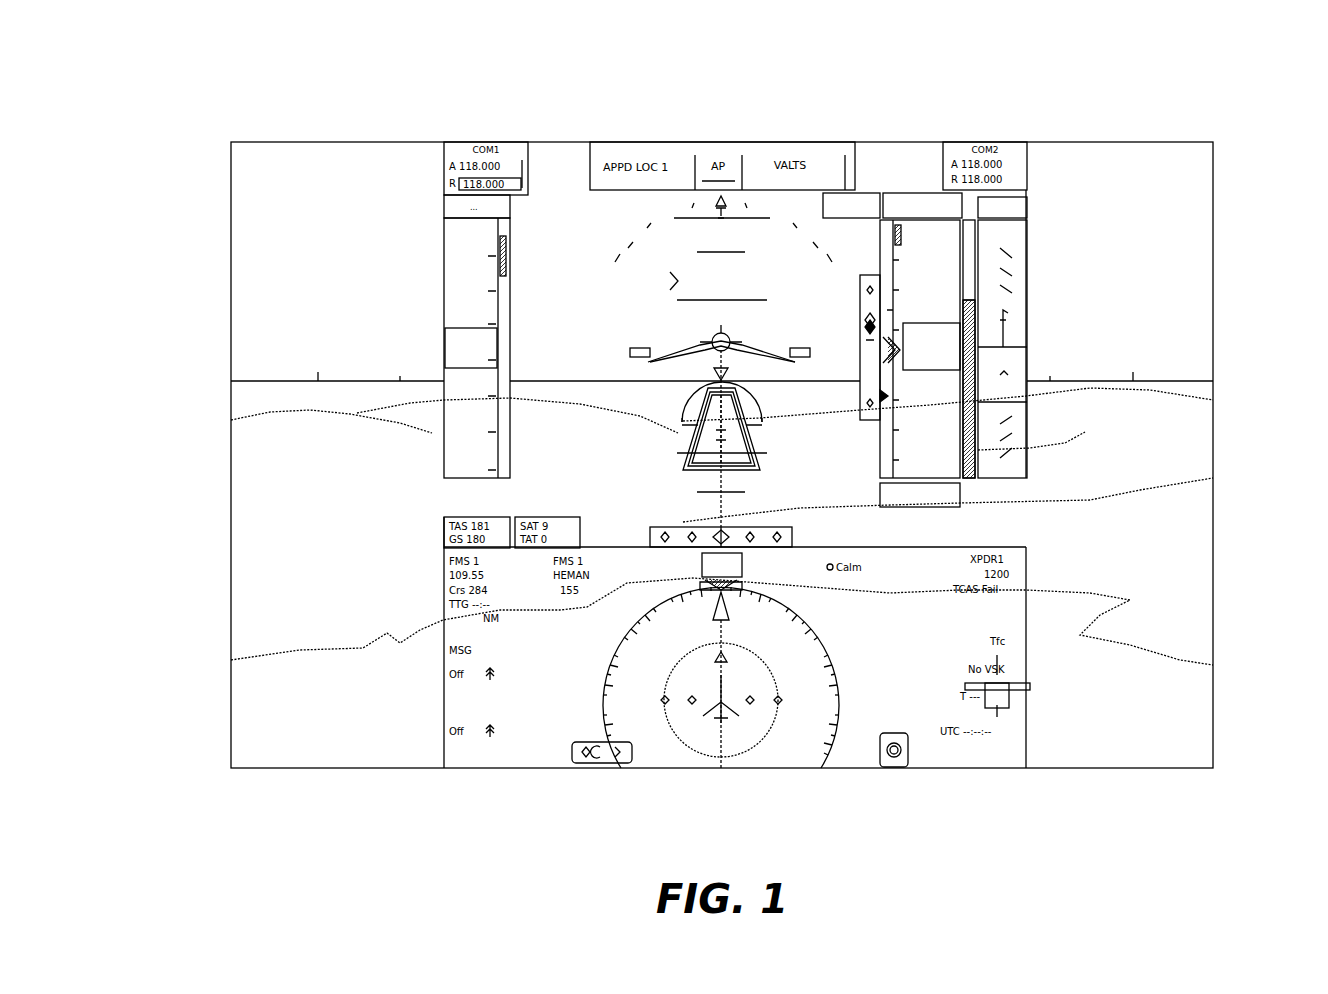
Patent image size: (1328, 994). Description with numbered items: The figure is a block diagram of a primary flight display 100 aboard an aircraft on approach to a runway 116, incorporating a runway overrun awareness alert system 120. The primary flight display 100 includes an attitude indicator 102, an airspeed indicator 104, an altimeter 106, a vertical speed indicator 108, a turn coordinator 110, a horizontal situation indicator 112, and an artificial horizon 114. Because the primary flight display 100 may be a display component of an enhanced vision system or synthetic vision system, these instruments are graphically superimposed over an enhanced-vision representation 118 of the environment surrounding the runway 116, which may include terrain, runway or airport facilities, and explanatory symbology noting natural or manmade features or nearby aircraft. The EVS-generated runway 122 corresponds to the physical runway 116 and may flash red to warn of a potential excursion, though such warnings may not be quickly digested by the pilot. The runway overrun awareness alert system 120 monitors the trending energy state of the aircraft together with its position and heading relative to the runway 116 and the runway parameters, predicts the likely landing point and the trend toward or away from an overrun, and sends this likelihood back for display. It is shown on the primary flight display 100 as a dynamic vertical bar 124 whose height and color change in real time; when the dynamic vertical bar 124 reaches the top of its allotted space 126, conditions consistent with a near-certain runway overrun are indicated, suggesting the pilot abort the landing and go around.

The primary flight display 100 is at (176, 101).
The attitude indicator 102 is at (637, 247).
The airspeed indicator 104 is at (455, 340).
The altimeter 106 is at (936, 292).
The vertical speed indicator 108 is at (1012, 330).
The turn coordinator 110 is at (705, 587).
The horizontal situation indicator 112 is at (785, 655).
The artificial horizon 114 is at (1092, 378).
The runway 116 is at (706, 374).
The enhanced-vision representation 118 is at (268, 412).
The runway overrun awareness alert system 120 is at (970, 278).
The EVS-generated runway 122 is at (746, 392).
The dynamic vertical bar 124 is at (970, 388).
The allotted space 126 is at (972, 280).